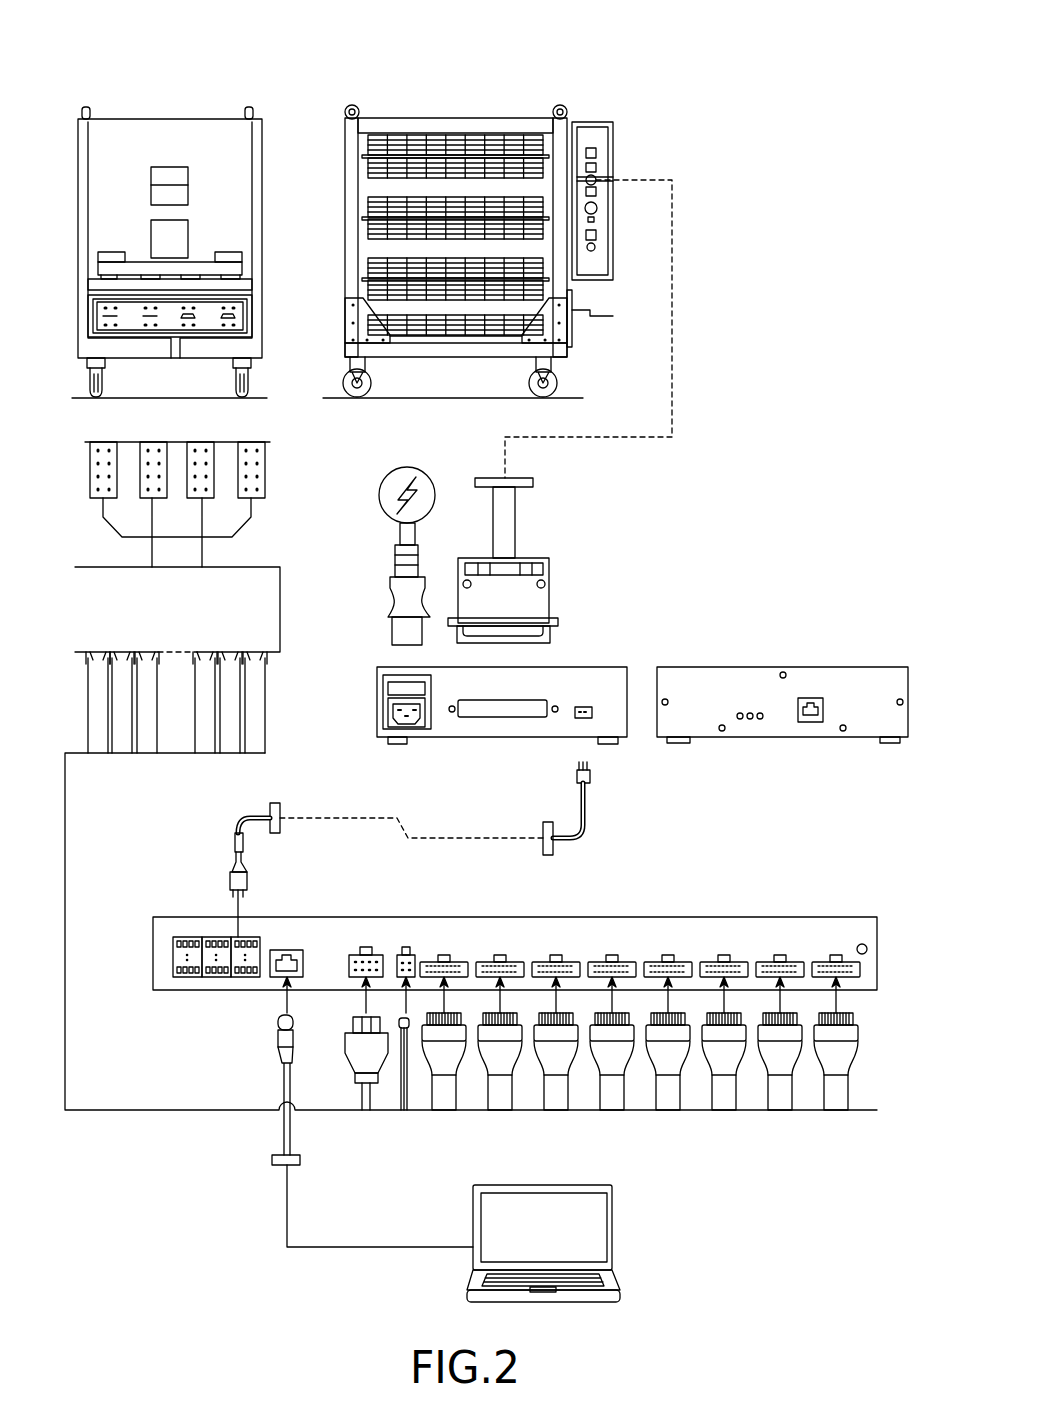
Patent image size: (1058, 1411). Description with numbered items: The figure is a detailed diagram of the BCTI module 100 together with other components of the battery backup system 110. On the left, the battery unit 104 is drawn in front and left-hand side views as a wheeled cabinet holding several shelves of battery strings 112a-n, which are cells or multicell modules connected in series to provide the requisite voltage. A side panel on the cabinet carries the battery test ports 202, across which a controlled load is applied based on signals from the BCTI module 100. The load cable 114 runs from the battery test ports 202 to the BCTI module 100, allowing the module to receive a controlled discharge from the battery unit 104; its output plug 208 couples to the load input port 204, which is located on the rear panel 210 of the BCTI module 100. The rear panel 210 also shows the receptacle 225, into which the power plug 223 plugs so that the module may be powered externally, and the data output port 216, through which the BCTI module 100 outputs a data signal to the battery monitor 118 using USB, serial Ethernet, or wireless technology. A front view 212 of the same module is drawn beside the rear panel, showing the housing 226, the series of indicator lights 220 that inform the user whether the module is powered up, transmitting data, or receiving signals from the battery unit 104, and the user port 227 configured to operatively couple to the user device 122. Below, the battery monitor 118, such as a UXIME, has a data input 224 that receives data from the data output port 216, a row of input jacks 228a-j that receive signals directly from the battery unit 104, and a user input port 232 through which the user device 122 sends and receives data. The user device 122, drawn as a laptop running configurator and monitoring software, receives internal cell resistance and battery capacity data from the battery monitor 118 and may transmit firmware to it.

The battery backup system 110 is at (78, 32).
The battery unit 104 is at (108, 80).
The battery strings 112a-n is at (365, 158).
The battery test ports 202 is at (603, 152).
The load cable 114 is at (674, 302).
The power plug 223 is at (390, 600).
The output plug 208 is at (550, 600).
The BCTI module 100 is at (698, 623).
The load input port 204 is at (543, 700).
The receptacle 225 is at (385, 700).
The data output port 216 is at (584, 720).
The rear panel 210 is at (432, 764).
The indicator lights 220 is at (750, 698).
The user port 227 is at (812, 698).
The housing 226 is at (862, 718).
The load control unit front view 212 is at (712, 770).
The data input 224 is at (240, 940).
The battery monitor 118 is at (435, 903).
The user input port 232 is at (278, 980).
The input jacks 228a-j is at (345, 1117).
The user device 122 is at (465, 1265).